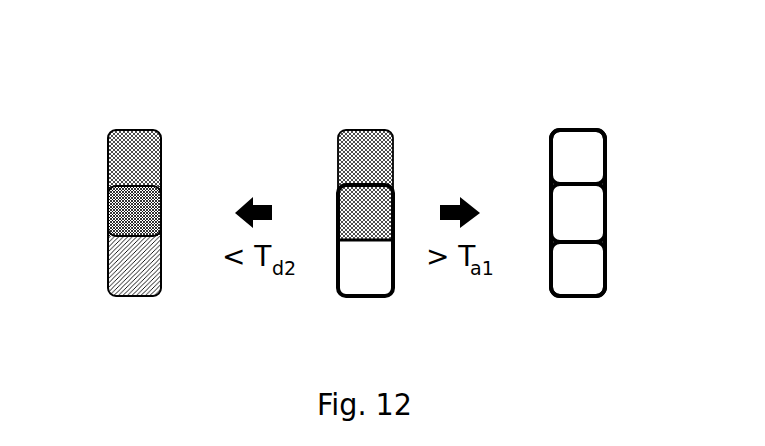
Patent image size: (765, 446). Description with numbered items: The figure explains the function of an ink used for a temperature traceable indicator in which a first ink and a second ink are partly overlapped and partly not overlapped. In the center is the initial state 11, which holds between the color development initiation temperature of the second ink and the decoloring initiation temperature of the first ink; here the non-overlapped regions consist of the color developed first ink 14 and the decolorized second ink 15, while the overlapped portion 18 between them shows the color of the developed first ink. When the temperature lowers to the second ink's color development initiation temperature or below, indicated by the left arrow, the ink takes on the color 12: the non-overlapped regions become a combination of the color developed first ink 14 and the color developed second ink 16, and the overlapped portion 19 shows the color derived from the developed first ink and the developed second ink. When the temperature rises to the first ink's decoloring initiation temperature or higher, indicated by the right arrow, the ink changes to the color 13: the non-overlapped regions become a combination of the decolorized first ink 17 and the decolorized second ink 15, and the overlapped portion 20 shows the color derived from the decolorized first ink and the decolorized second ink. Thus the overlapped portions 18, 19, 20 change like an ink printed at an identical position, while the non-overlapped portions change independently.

The initial state 11 is at (436, 213).
The color 12 is at (215, 213).
The color 13 is at (570, 191).
The color developed first ink 14 is at (112, 168).
The decolorized second ink 15 is at (346, 275).
The color developed second ink 16 is at (115, 272).
The decolorized first ink 17 is at (562, 168).
The overlapped portion 18 is at (345, 217).
The overlapped portion 19 is at (118, 218).
The overlapped portion 20 is at (568, 218).